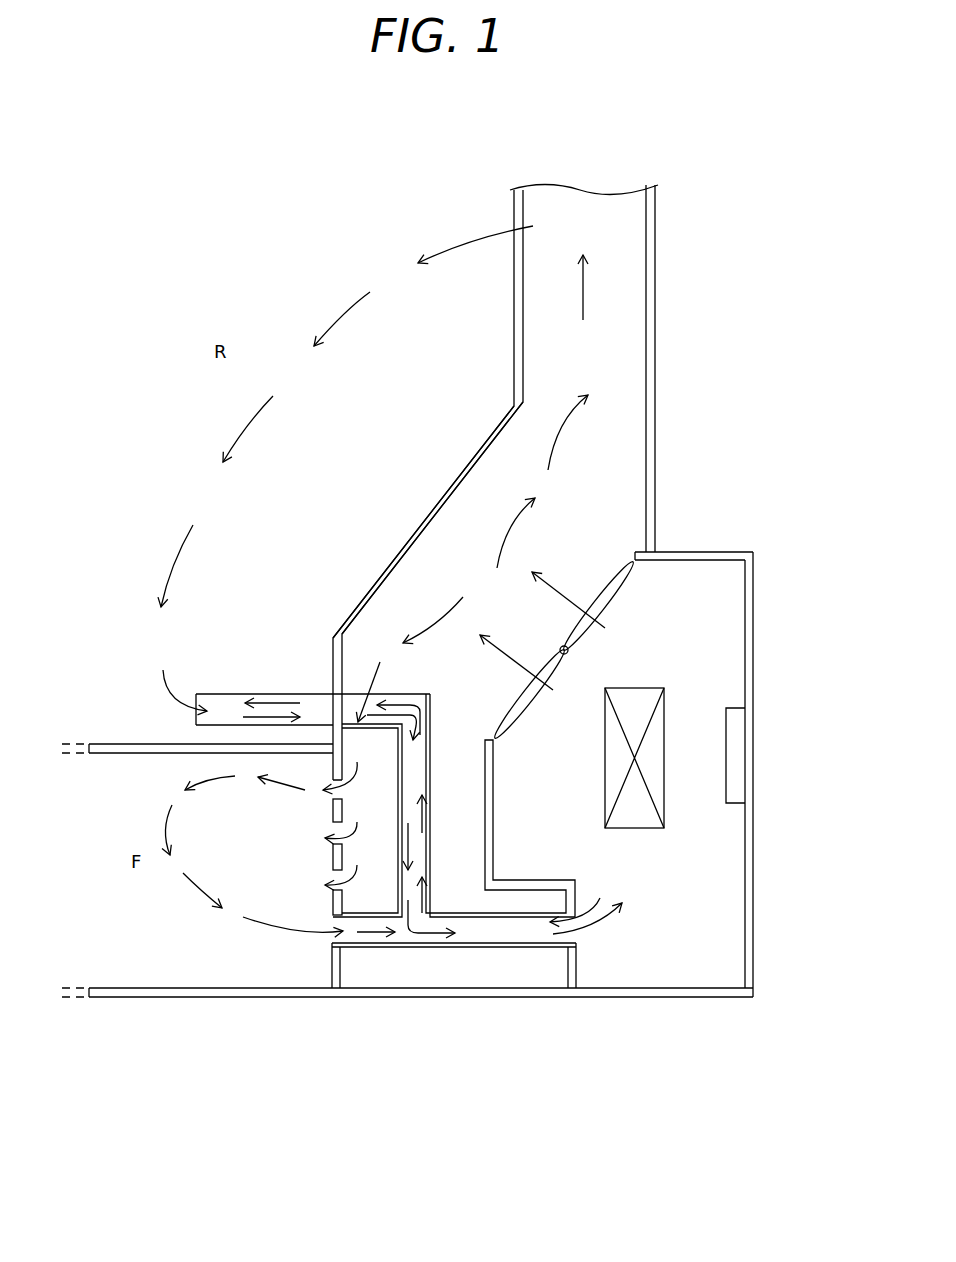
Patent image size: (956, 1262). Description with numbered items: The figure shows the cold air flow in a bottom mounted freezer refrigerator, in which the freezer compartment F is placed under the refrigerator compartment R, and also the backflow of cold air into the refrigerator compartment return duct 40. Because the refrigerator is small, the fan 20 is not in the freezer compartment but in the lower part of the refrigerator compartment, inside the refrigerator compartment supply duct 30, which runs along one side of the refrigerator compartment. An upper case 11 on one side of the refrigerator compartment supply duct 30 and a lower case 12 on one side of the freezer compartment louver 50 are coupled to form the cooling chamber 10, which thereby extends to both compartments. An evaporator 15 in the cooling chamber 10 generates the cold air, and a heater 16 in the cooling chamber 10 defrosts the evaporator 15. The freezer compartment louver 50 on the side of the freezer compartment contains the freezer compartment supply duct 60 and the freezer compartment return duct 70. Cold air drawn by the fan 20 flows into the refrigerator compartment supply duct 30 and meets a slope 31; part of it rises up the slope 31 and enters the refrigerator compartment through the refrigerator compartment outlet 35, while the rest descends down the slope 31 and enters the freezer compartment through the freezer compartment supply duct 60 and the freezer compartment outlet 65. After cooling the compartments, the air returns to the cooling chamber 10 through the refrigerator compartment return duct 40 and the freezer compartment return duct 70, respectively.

The cooling chamber 10 is at (718, 774).
The upper case 11 is at (753, 595).
The lower case 12 is at (752, 920).
The evaporator 15 is at (657, 718).
The heater 16 is at (732, 770).
The fan 20 is at (633, 583).
The refrigerator compartment supply duct 30 is at (518, 464).
The slope 31 is at (418, 528).
The refrigerator compartment outlet 35 is at (520, 221).
The refrigerator compartment return duct 40 is at (208, 708).
The freezer compartment louver 50 is at (490, 1003).
The freezer compartment supply duct 60 is at (339, 820).
The freezer compartment outlet 65 is at (333, 825).
The freezer compartment return duct 70 is at (437, 945).